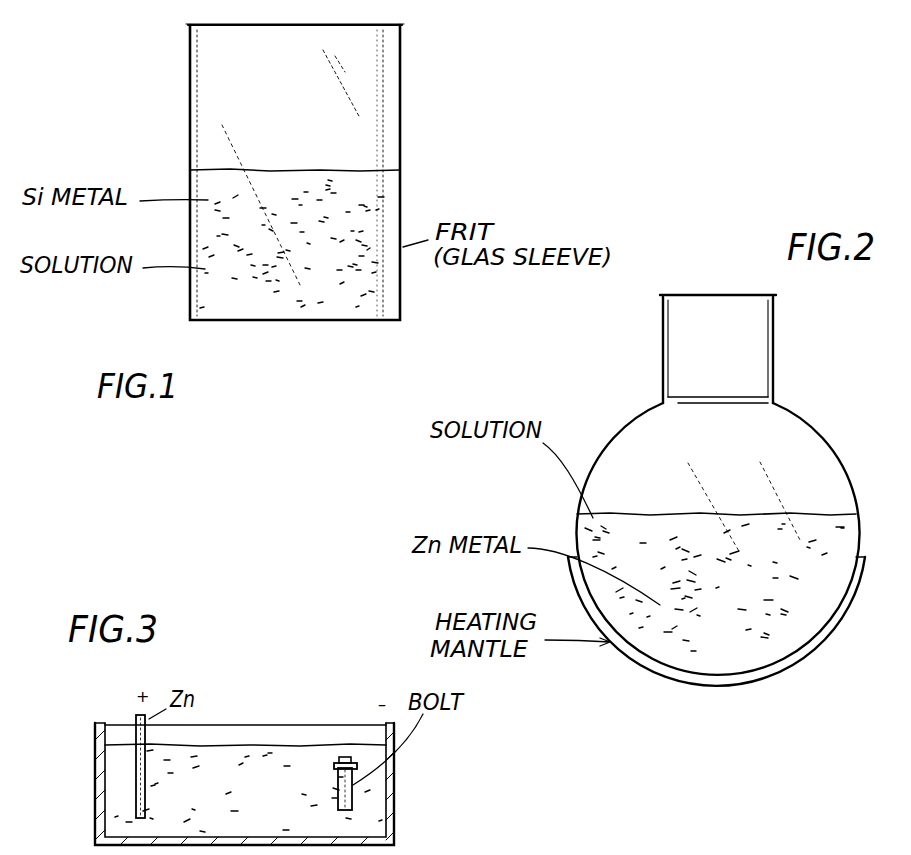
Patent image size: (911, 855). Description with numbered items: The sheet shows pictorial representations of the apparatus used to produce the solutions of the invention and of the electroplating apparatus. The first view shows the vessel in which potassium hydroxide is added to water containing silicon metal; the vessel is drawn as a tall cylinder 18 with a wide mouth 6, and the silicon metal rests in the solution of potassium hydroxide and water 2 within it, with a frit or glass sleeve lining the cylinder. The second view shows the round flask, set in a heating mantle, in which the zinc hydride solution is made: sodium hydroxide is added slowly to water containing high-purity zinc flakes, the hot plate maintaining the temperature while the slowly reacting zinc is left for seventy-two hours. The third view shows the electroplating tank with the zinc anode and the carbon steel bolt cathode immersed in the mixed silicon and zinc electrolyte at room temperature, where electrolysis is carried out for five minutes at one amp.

The 18 inch cylinder 18 is at (190, 89).
The 6 inch wide mouth 6 is at (383, 26).
The KOH/H2O solution 2 is at (419, 163).